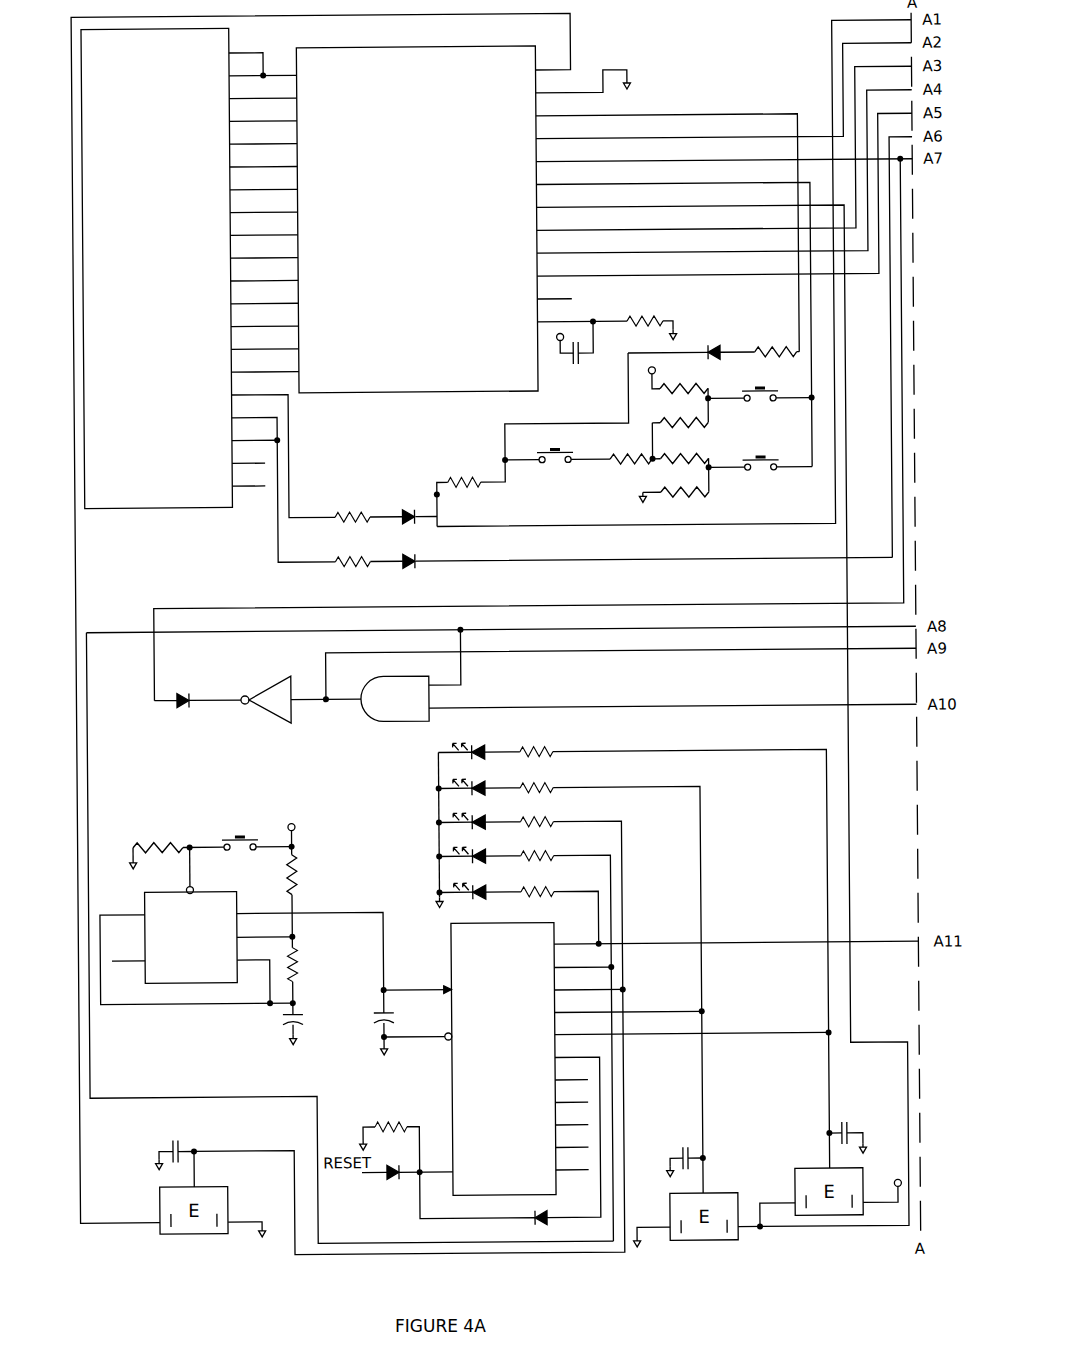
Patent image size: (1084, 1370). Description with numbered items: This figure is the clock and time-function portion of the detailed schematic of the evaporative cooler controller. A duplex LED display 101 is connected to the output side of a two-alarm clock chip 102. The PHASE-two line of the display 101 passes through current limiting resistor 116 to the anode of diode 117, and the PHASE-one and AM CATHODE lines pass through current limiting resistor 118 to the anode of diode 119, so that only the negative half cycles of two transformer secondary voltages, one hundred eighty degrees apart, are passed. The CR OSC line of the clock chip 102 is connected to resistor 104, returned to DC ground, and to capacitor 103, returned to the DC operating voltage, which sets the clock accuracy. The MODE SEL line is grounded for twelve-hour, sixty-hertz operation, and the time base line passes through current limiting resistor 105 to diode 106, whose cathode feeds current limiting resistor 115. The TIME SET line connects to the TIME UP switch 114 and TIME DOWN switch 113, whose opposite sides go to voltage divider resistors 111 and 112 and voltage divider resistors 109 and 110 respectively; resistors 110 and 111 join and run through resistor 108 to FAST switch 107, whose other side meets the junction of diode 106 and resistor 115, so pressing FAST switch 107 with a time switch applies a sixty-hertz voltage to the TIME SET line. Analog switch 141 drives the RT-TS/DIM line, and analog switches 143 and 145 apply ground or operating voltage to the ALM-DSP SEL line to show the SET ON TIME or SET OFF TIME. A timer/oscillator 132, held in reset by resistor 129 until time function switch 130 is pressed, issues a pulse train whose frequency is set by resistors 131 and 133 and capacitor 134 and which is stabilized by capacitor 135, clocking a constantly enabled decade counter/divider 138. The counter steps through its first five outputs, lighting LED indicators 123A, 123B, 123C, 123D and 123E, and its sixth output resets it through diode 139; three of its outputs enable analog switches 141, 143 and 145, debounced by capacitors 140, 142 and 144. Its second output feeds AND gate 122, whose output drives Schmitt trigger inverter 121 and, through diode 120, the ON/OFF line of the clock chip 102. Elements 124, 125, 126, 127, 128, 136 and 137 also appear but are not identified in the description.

The duplex LED display 101 is at (157, 281).
The clock chip 102 is at (417, 232).
The capacitor 103 is at (579, 365).
The resistor 104 is at (646, 331).
The current limiting resistor 105 is at (776, 364).
The diode 106 is at (721, 340).
The FAST switch 107 is at (559, 469).
The resistor 108 is at (631, 471).
The voltage divider resistor 109 is at (678, 391).
The voltage divider resistor 110 is at (684, 433).
The voltage divider resistor 111 is at (685, 468).
The voltage divider resistor 112 is at (685, 502).
The TIME DOWN switch 113 is at (763, 407).
The TIME UP switch 114 is at (764, 475).
The current limiting resistor 115 is at (466, 493).
The current limiting resistor 116 is at (353, 528).
The diode 117 is at (413, 530).
The current limiting resistor 118 is at (356, 571).
The diode 119 is at (413, 575).
The diode 120 is at (191, 688).
The Schmitt trigger inverter 121 is at (266, 690).
The AND gate 122 is at (395, 688).
The LED indicator 123A is at (441, 892).
The LED indicator 123B is at (441, 856).
The LED indicator 123C is at (440, 822).
The LED indicator 123D is at (440, 788).
The LED indicator 123E is at (440, 752).
The resistor 124 is at (539, 762).
The resistor 125 is at (539, 798).
The resistor 126 is at (539, 832).
The resistor 127 is at (540, 866).
The resistor 128 is at (540, 902).
The resistor 129 is at (158, 858).
The time function switch 130 is at (244, 856).
The resistor 131 is at (310, 858).
The timer/oscillator 132 is at (191, 946).
The resistor 133 is at (311, 966).
The capacitor 134 is at (276, 1021).
The capacitor 135 is at (366, 1021).
The resistor 136 is at (393, 1138).
The diode 137 is at (396, 1187).
The decade counter/divider 138 is at (503, 1071).
The diode 139 is at (560, 1225).
The capacitor 140 is at (181, 1141).
The analog switch 141 is at (194, 1221).
The capacitor 142 is at (669, 1152).
The analog switch 143 is at (704, 1226).
The capacitor 144 is at (854, 1123).
The analog switch 145 is at (847, 1195).